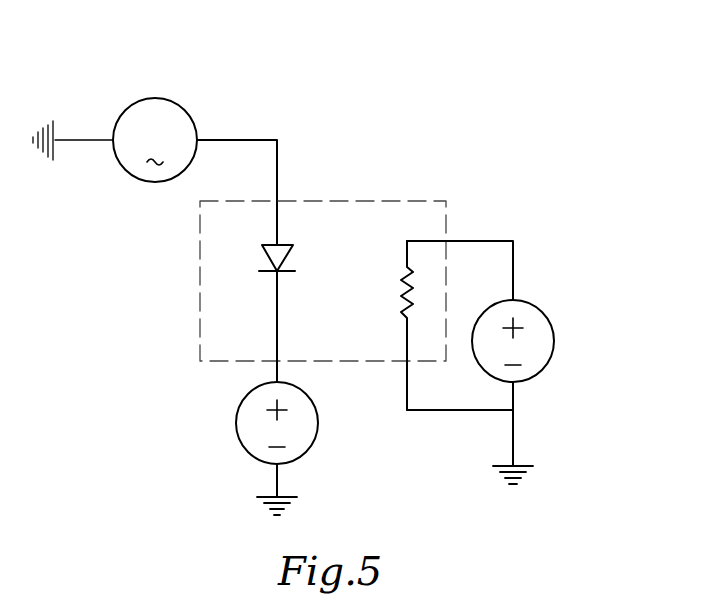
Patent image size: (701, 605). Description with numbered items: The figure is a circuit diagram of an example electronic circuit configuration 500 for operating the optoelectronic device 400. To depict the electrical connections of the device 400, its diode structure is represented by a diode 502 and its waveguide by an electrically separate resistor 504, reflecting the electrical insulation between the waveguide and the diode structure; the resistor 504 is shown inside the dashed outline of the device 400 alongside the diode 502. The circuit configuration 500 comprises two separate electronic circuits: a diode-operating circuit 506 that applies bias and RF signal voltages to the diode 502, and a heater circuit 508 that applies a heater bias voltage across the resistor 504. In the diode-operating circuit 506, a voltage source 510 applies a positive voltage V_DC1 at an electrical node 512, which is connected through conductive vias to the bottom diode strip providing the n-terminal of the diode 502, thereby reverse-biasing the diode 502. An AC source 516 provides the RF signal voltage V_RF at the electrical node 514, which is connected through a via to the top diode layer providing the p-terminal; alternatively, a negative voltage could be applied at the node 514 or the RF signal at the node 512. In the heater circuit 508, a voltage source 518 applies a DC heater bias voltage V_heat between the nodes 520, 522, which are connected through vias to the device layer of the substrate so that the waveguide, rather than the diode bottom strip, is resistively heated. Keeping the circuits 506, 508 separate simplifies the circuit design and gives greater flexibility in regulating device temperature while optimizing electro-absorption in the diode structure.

The electronic circuit configuration 500 is at (518, 74).
The diode-operating circuit 506 is at (196, 63).
The AC source 516 is at (155, 98).
The electrical node 514 is at (238, 140).
The optoelectronic device 400 is at (329, 201).
The diode 502 is at (264, 255).
The electrical node 512 is at (280, 323).
The voltage source 510 is at (320, 418).
The node 520 is at (491, 241).
The resistor 504 is at (400, 286).
The node 522 is at (460, 411).
The voltage source 518 is at (545, 312).
The heater circuit 508 is at (540, 259).